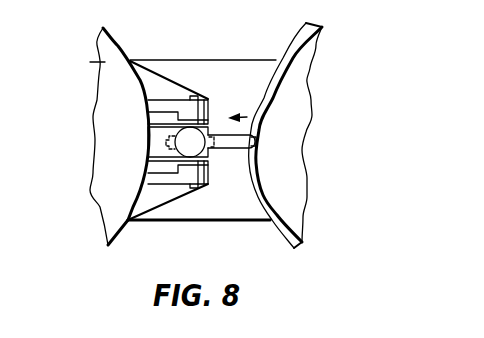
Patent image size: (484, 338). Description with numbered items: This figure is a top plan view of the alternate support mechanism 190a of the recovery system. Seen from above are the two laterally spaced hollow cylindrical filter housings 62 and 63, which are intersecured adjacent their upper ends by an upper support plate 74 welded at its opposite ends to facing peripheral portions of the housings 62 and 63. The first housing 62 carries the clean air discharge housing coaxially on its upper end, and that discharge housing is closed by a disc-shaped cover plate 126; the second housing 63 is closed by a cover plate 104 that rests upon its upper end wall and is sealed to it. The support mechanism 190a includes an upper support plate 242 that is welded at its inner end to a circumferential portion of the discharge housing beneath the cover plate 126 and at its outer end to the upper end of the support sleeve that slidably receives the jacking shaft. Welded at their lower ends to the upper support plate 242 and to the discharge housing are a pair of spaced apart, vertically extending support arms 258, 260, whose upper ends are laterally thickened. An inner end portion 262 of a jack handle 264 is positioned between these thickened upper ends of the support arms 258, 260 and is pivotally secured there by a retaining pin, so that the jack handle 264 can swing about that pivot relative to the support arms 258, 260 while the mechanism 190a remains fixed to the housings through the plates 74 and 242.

The filter housing 62 is at (114, 42).
The filter housing 63 is at (282, 48).
The cover plate 126 is at (90, 62).
The cover plate 104 is at (299, 63).
The upper support plate 74 is at (238, 213).
The support arm 260 is at (163, 100).
The support arm 258 is at (169, 201).
The upper support plate 242 is at (177, 93).
The inner end portion 262 is at (155, 136).
The support mechanism 190a is at (247, 117).
The jack handle 264 is at (256, 141).